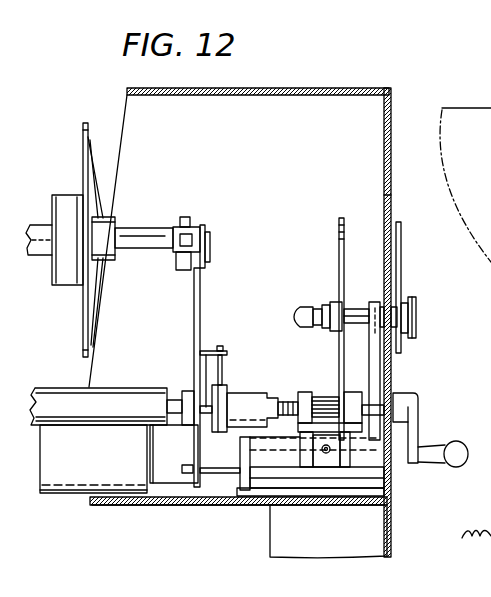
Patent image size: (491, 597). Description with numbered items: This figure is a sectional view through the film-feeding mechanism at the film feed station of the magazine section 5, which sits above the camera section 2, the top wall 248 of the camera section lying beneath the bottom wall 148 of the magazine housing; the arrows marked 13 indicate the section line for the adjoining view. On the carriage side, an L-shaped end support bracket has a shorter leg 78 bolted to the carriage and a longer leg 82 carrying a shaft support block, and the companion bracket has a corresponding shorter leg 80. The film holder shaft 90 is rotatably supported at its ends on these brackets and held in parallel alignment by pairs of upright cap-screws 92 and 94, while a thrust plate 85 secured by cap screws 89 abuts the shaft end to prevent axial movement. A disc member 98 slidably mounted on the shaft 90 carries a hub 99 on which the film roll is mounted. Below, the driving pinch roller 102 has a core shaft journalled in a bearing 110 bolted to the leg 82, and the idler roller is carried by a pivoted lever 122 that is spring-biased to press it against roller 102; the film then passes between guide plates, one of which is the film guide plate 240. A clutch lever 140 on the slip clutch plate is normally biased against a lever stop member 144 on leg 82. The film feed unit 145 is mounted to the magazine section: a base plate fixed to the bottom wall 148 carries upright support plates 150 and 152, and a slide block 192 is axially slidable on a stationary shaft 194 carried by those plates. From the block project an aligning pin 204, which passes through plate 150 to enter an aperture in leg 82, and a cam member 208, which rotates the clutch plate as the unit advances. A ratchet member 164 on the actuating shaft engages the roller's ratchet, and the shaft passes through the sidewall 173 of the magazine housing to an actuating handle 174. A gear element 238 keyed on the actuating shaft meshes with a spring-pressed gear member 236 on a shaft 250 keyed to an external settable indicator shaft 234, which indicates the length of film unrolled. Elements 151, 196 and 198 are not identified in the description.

The camera section 2 is at (392, 525).
The magazine section 5 is at (327, 88).
The section line 13 is at (383, 197).
The shorter leg 78 is at (165, 470).
The shorter leg 80 is at (186, 270).
The longer leg 82 is at (196, 306).
The thrust plate 85 is at (211, 235).
The cap screws 89 is at (210, 258).
The film holder shaft 90 is at (158, 214).
The upright cap-screws 92 is at (188, 217).
The upright cap-screws 94 is at (180, 243).
The disc member 98 is at (86, 126).
The hub 99 is at (74, 198).
The driving roller 102 is at (72, 386).
The bearing 110 is at (189, 388).
The lever 122 is at (209, 349).
The clutch lever 140 is at (226, 350).
The lever stop member 144 is at (224, 368).
The film feed unit 145 is at (299, 386).
The bottom wall 148 is at (90, 499).
The upright support plate 150 is at (240, 476).
The member 151 is at (484, 421).
The upright support plate 152 is at (372, 357).
The ratchet member 164 is at (272, 390).
The sidewall 173 is at (390, 197).
The actuating handle 174 is at (449, 462).
The slide block 192 is at (268, 462).
The stationary shaft 194 is at (250, 447).
The member 196 is at (479, 331).
The member 198 is at (479, 405).
The aligning pin 204 is at (188, 464).
The cam member 208 is at (250, 405).
The indicator shaft 234 is at (399, 260).
The gear member 236 is at (340, 258).
The gear element 238 is at (335, 379).
The film guide plate 240 is at (53, 488).
The top wall 248 is at (118, 508).
The shaft 250 is at (392, 316).